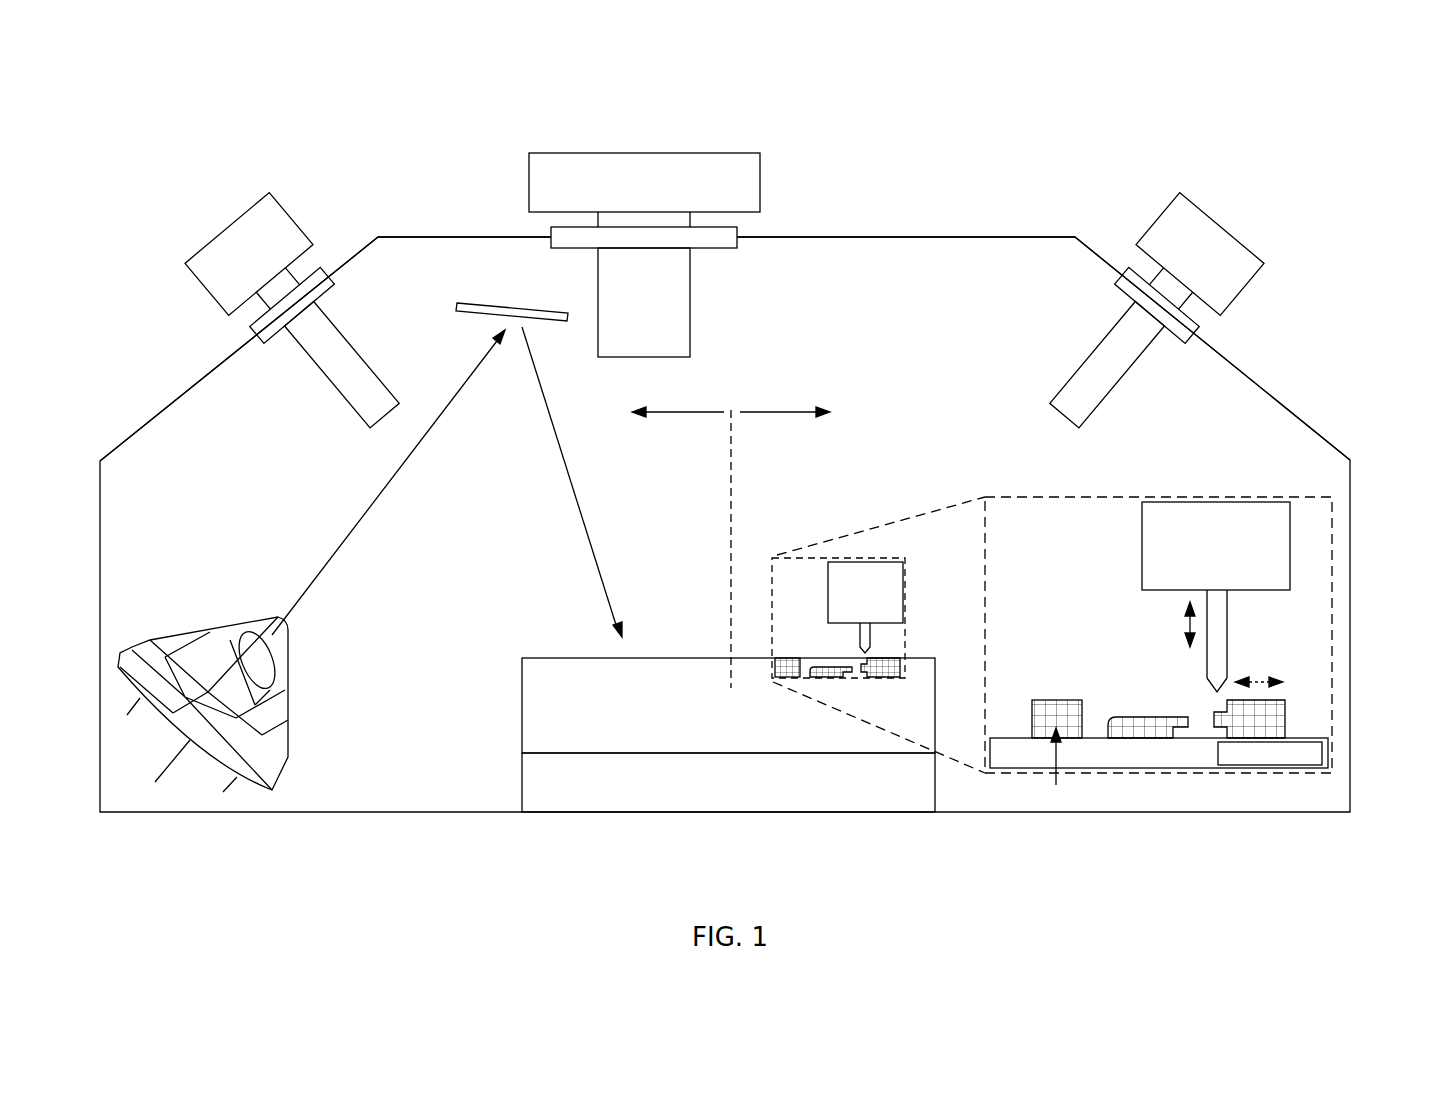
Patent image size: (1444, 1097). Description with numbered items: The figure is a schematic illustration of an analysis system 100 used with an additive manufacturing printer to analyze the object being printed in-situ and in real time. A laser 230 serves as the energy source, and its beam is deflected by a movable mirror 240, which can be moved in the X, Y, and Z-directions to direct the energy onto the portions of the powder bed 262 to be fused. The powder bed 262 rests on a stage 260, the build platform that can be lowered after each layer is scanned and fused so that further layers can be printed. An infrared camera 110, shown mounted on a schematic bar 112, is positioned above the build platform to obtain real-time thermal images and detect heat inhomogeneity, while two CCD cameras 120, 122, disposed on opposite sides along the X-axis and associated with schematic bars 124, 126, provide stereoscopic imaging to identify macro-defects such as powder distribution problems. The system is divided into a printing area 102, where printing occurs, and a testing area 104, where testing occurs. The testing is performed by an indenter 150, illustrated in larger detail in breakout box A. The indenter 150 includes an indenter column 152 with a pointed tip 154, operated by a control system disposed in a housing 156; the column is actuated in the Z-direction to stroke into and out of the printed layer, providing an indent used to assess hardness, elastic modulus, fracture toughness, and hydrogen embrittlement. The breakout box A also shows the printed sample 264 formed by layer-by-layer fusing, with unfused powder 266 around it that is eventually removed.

The analysis system 100 is at (148, 93).
The printing area 102 is at (681, 547).
The testing area 104 is at (785, 462).
The infrared camera 110 is at (762, 158).
The bar 112 is at (1040, 236).
The CCD camera 120 is at (192, 274).
The CCD camera 122 is at (1250, 280).
The bar 124 is at (143, 430).
The bar 126 is at (1297, 410).
The indenter 150 is at (800, 595).
The indenter column 152 is at (1228, 637).
The tip 154 is at (1208, 690).
The housing 156 is at (1240, 527).
The laser 230 is at (277, 707).
The movable mirror 240 is at (470, 310).
The stage 260 is at (521, 765).
The powder bed 262 is at (521, 707).
The sample 264 is at (1202, 730).
The unfused powder 266 is at (1287, 722).
The breakout box A is at (1335, 572).